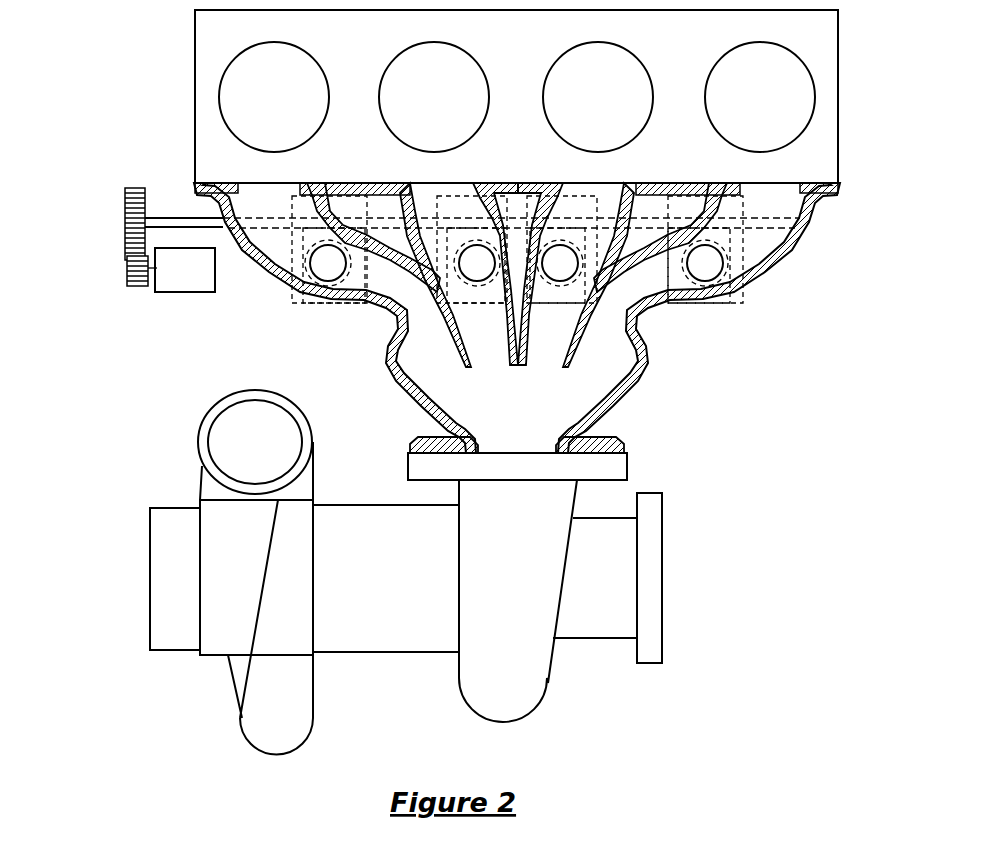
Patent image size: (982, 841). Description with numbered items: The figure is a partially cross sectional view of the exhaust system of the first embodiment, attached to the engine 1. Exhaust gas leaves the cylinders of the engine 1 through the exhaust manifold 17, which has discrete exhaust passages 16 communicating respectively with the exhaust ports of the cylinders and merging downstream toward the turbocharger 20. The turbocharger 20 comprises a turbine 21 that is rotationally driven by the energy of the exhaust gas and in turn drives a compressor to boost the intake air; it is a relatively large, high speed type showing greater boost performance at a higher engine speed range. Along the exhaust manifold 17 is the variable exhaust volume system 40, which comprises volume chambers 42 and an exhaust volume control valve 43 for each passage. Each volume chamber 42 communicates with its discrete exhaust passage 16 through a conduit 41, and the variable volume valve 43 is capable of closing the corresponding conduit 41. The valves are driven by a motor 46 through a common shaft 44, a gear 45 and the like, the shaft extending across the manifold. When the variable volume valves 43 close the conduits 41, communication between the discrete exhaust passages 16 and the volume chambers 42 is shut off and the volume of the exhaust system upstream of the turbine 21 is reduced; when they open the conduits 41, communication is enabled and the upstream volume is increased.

The engine 1 is at (193, 30).
The discrete exhaust passages 16 is at (262, 246).
The exhaust manifold 17 is at (630, 377).
The turbocharger 20 is at (562, 668).
The turbine 21 is at (522, 719).
The variable exhaust volume system 40 is at (157, 198).
The conduits 41 is at (327, 270).
The volume chambers 42 is at (745, 258).
The exhaust volume control valve 43 is at (355, 305).
The common shaft 44 is at (183, 217).
The gear 45 is at (125, 218).
The motor 46 is at (185, 293).